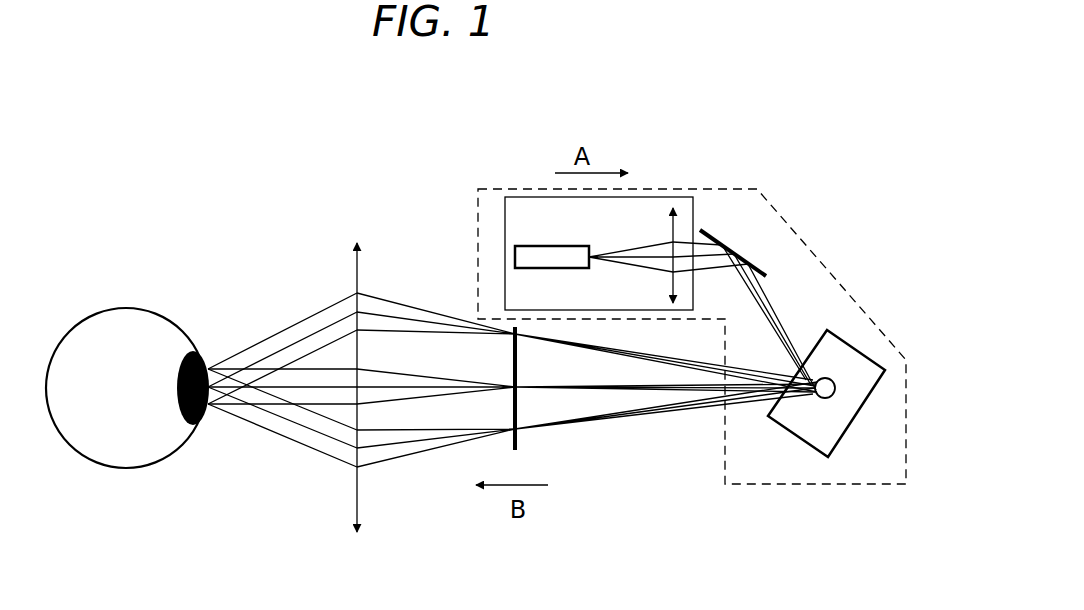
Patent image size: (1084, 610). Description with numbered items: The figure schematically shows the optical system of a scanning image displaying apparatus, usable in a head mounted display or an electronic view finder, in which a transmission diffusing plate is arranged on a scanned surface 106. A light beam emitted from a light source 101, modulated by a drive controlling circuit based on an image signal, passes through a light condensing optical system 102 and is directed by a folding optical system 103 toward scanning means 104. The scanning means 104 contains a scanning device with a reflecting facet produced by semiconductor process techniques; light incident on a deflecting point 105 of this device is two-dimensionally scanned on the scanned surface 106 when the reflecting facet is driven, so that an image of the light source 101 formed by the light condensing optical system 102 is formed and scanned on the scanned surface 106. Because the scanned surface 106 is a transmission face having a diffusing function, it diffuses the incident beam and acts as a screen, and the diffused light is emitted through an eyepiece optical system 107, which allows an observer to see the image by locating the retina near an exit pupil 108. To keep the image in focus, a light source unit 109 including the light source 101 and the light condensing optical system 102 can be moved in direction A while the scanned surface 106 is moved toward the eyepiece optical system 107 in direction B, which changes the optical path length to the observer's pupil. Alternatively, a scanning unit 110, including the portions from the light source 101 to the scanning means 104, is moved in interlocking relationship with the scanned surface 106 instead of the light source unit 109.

The light source 101 is at (523, 257).
The light condensing optical system 102 is at (670, 200).
The folding optical system 103 is at (712, 234).
The scanning means 104 is at (837, 355).
The deflecting point 105 is at (835, 398).
The scanned surface 106 is at (517, 437).
The eyepiece optical system 107 is at (357, 278).
The exit pupil 108 is at (207, 412).
The light source unit 109 is at (550, 212).
The scanning unit 110 is at (752, 472).